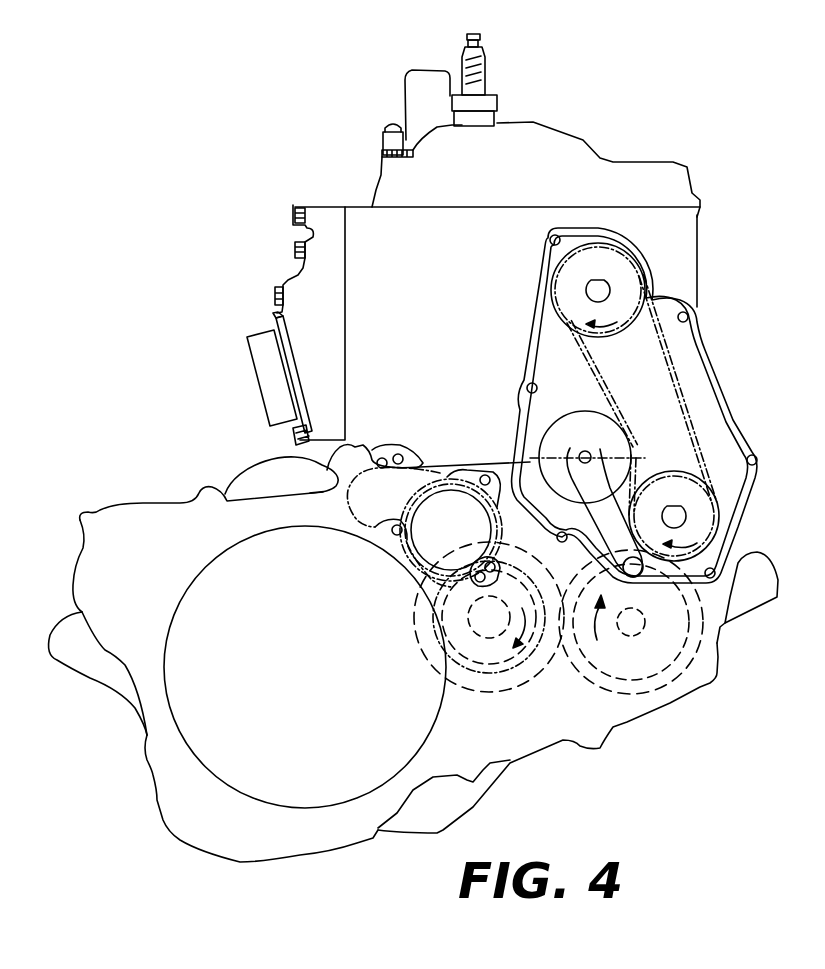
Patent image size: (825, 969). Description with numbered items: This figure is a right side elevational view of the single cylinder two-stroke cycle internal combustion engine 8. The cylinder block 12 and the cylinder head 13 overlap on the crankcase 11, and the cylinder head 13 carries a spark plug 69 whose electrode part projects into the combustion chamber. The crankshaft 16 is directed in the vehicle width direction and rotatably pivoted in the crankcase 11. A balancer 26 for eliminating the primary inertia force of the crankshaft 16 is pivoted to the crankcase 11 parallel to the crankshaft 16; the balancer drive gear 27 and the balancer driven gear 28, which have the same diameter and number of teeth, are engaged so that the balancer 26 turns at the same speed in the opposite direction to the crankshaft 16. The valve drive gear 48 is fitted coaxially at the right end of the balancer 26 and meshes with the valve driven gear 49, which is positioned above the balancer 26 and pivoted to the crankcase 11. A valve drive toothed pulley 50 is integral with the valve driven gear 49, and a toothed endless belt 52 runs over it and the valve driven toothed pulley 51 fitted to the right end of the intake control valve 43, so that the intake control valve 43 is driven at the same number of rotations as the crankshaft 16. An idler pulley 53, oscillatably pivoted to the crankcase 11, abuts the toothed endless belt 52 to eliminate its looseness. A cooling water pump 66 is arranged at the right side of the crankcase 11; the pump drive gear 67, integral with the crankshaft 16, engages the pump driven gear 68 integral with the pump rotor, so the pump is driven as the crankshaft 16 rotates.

The internal combustion engine 8 is at (231, 299).
The crankcase 11 is at (152, 523).
The cylinder block 12 is at (363, 210).
The cylinder head 13 is at (390, 176).
The crankshaft 16 is at (489, 645).
The balancer 26 is at (667, 693).
The balancer drive gear 27 is at (526, 682).
The balancer driven gear 28 is at (604, 695).
The intake control valve 43 is at (599, 280).
The valve drive gear 48 is at (717, 643).
The valve driven gear 49 is at (755, 487).
The valve drive toothed pulley 50 is at (717, 517).
The valve driven toothed pulley 51 is at (632, 293).
The toothed endless belt 52 is at (690, 397).
The idler pulley 53 is at (572, 413).
The cooling water pump 66 is at (380, 532).
The pump drive gear 67 is at (438, 633).
The pump driven gear 68 is at (445, 488).
The spark plug 69 is at (472, 83).